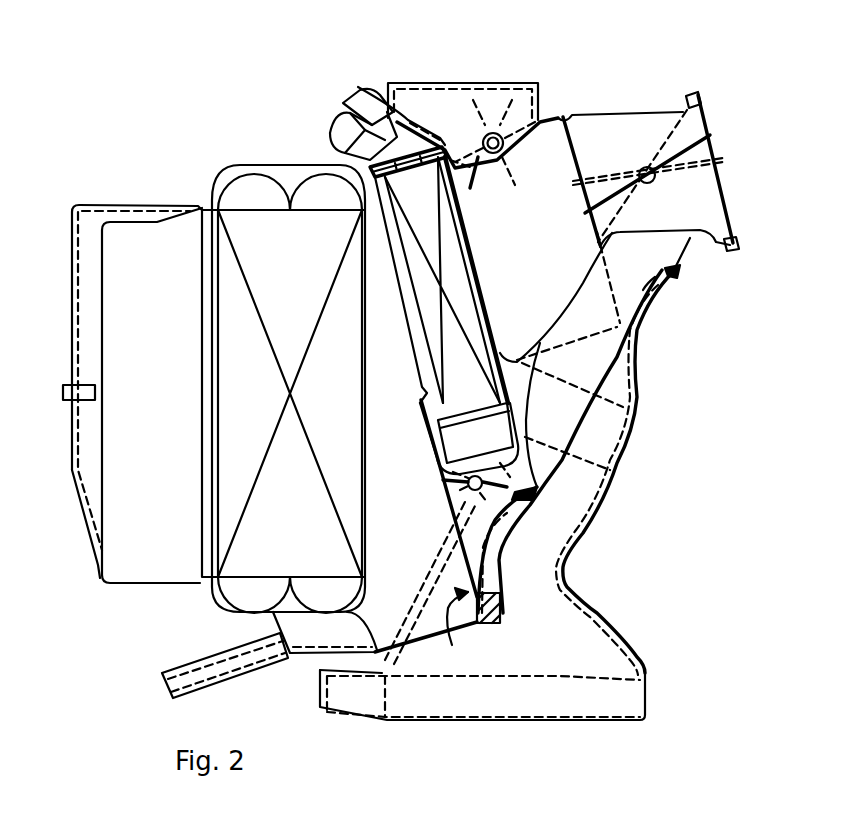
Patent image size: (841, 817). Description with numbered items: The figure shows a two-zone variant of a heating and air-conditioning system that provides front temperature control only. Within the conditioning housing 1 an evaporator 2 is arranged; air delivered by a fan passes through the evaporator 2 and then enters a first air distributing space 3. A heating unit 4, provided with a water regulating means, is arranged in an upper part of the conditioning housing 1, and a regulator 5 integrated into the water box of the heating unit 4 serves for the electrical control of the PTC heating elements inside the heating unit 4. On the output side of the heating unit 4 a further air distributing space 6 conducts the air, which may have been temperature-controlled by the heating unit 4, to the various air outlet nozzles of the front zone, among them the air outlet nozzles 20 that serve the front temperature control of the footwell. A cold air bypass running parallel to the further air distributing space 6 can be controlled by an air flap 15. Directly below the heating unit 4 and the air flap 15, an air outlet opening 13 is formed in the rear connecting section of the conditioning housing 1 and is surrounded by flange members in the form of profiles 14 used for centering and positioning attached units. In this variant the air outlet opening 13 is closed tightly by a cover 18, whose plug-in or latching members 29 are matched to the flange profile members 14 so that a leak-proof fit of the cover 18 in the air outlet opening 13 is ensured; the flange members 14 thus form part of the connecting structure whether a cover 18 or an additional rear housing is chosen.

The conditioning housing 1 is at (578, 86).
The evaporator 2 is at (235, 340).
The first air distributing space 3 is at (406, 485).
The heating unit 4 is at (440, 343).
The regulator 5 is at (481, 454).
The further air distributing space 6 is at (556, 227).
The air outlet opening 13 is at (454, 631).
The flange members or profiles 14 is at (680, 268).
The air flap 15 is at (466, 490).
The cover 18 is at (480, 560).
The air outlet nozzles 20 is at (590, 700).
The plug-in or latching members 29 is at (503, 596).